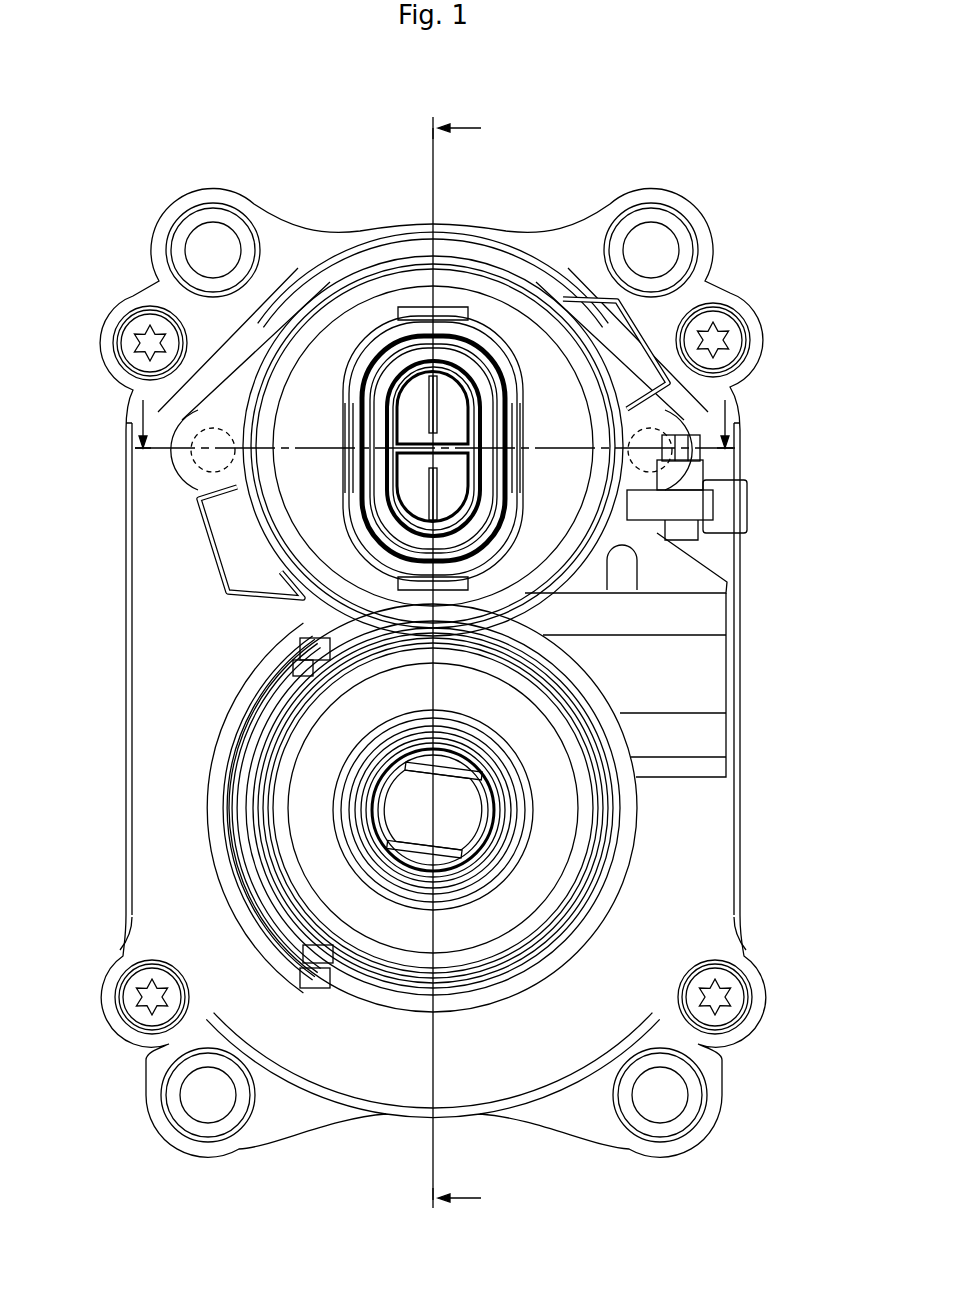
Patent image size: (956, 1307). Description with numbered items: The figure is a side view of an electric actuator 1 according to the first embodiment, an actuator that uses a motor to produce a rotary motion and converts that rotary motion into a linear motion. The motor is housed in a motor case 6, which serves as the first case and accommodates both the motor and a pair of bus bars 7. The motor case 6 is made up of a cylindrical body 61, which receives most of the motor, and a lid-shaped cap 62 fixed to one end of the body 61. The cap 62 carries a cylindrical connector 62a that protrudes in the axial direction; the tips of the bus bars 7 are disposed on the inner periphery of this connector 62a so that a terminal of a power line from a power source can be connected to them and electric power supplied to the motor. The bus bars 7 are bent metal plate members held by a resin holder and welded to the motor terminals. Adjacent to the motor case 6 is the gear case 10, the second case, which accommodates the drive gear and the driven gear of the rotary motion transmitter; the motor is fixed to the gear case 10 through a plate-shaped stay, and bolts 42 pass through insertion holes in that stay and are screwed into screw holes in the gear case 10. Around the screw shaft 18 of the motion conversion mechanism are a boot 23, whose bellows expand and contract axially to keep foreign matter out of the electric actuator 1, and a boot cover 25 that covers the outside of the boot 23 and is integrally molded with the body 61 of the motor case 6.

The electric actuator 1 is at (577, 158).
The gear case 10 is at (686, 210).
The motor case 6 is at (333, 166).
The body 61 is at (410, 248).
The cap 62 is at (356, 325).
The connector 62a is at (487, 330).
The bus bar 7 is at (437, 484).
The bolt 42 is at (190, 472).
The boot 23 is at (510, 707).
The screw shaft 18 is at (403, 807).
The boot cover 25 is at (665, 850).